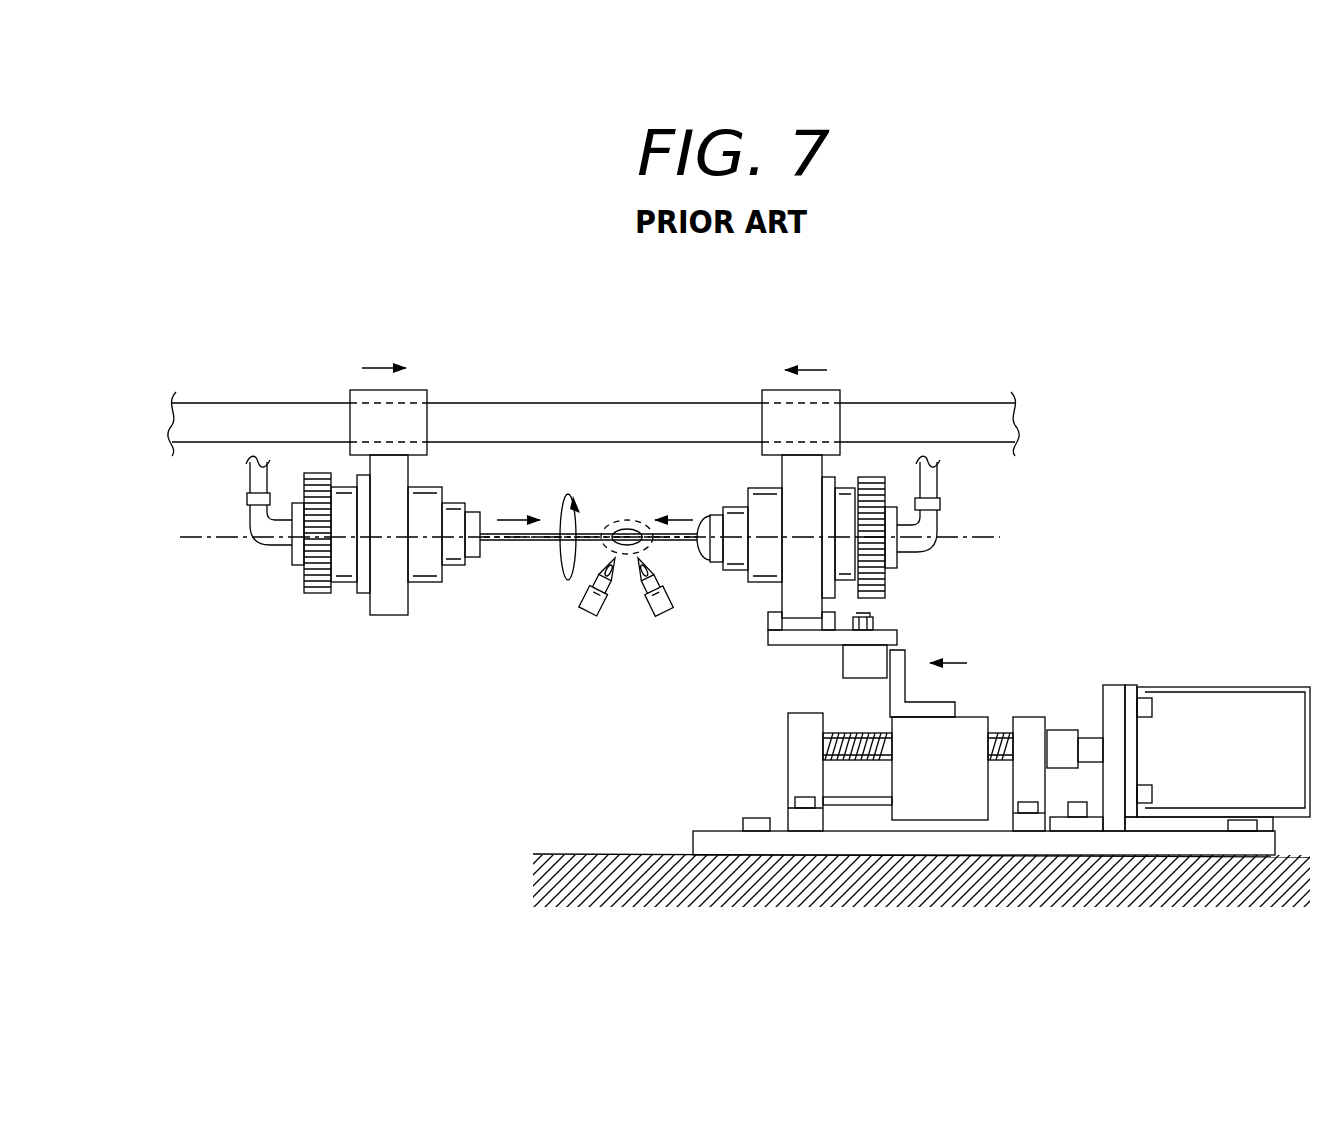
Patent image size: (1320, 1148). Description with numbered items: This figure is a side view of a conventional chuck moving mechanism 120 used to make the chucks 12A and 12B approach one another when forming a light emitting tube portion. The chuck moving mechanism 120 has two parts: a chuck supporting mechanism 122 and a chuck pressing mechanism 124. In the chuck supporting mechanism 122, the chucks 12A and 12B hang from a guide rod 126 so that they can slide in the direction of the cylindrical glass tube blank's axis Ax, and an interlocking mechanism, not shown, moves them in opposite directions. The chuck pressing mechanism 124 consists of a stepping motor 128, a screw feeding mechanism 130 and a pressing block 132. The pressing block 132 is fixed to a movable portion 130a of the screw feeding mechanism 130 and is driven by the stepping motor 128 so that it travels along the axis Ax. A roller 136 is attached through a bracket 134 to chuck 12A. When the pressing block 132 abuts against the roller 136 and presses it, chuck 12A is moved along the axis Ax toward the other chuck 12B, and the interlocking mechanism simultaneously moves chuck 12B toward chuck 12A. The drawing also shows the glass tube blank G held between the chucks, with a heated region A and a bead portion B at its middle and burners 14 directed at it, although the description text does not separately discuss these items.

The chuck moving mechanism 120 is at (1180, 262).
The chuck supporting mechanism 122 is at (860, 326).
The chuck pressing mechanism 124 is at (1155, 588).
The guide rod 126 is at (598, 400).
The stepping motor 128 is at (1218, 700).
The screw feeding mechanism 130 is at (1017, 697).
The movable portion 130a is at (943, 805).
The pressing block 132 is at (905, 655).
The bracket 134 is at (888, 630).
The roller 136 is at (843, 660).
The chuck 12A is at (748, 610).
The chuck 12B is at (447, 610).
The burners 14 is at (683, 602).
The heated region A is at (640, 548).
The bead portion B is at (627, 528).
The glass rod G is at (545, 541).
The axis Ax is at (200, 546).